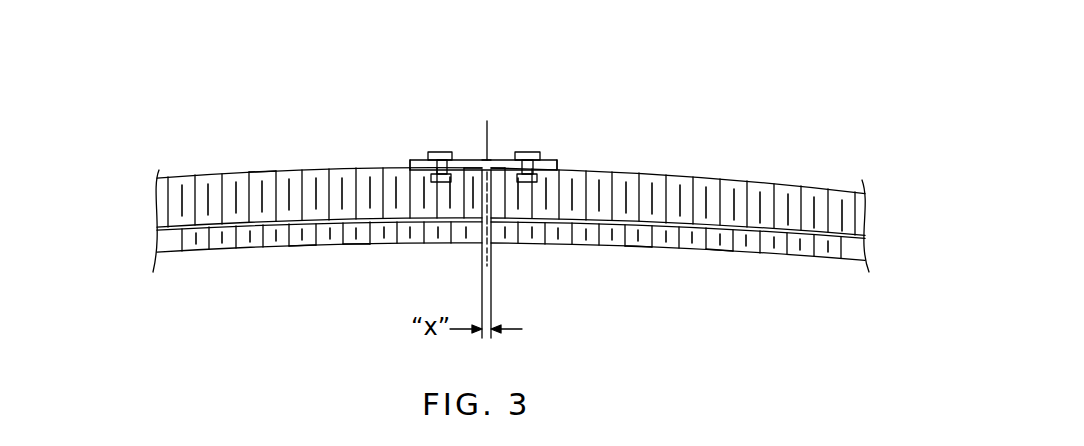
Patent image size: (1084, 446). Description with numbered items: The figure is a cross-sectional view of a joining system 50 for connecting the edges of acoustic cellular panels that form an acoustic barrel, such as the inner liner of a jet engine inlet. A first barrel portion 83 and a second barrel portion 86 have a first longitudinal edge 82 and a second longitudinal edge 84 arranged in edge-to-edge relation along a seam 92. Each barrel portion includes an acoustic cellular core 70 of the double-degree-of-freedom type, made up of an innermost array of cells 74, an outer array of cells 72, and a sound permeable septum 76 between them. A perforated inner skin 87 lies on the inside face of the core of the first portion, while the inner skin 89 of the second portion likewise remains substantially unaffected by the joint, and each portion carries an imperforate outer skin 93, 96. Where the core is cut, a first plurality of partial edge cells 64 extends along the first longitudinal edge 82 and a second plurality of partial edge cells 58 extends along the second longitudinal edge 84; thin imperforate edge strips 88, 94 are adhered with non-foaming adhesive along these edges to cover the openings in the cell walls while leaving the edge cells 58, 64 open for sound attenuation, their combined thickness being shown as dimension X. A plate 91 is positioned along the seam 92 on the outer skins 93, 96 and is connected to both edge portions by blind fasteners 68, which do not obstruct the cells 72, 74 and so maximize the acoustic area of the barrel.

The joining system 50 is at (655, 57).
The acoustic cellular core 70 is at (157, 211).
The outer array of cells 72 is at (849, 211).
The sound permeable septum 76 is at (833, 236).
The innermost array of cells 74 is at (834, 258).
The outer skin 93 is at (287, 175).
The perforated inner skin 87 is at (300, 252).
The first barrel portion 83 is at (358, 250).
The inner skin 89 is at (640, 249).
The second barrel portion 86 is at (719, 256).
The first plurality of partial edge cells 64 is at (478, 206).
The first longitudinal edge 82 is at (476, 224).
The second plurality of partial edge cells 58 is at (493, 208).
The second longitudinal edge 84 is at (497, 222).
The seam 92 is at (487, 118).
The edge strip 88 is at (481, 169).
The plate 91 is at (417, 159).
The outer skin 96 is at (610, 171).
The edge strip 94 is at (501, 172).
The blind fastener 68 is at (537, 156).